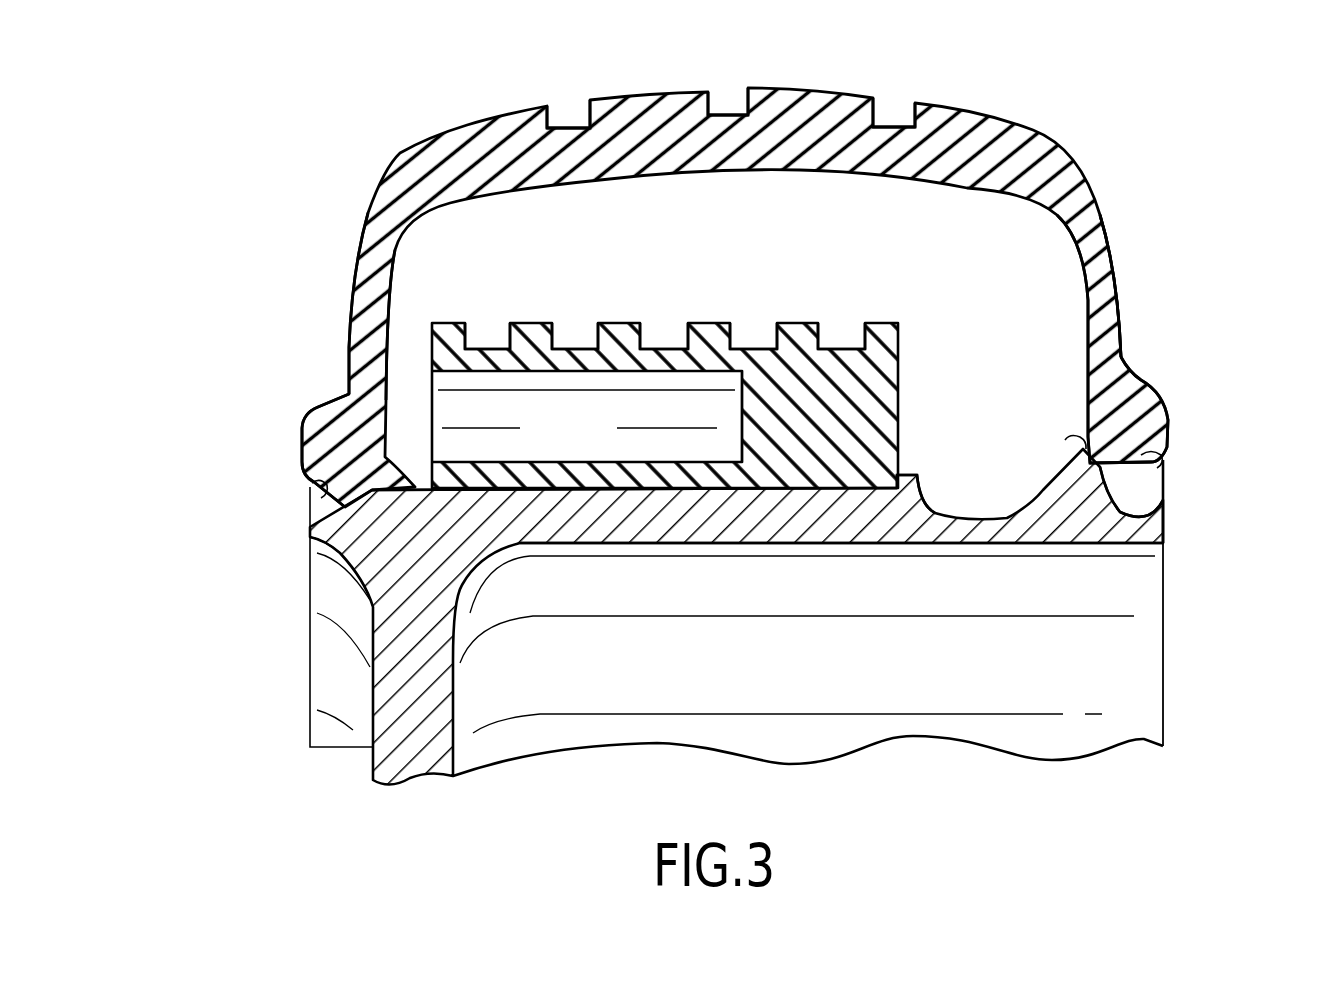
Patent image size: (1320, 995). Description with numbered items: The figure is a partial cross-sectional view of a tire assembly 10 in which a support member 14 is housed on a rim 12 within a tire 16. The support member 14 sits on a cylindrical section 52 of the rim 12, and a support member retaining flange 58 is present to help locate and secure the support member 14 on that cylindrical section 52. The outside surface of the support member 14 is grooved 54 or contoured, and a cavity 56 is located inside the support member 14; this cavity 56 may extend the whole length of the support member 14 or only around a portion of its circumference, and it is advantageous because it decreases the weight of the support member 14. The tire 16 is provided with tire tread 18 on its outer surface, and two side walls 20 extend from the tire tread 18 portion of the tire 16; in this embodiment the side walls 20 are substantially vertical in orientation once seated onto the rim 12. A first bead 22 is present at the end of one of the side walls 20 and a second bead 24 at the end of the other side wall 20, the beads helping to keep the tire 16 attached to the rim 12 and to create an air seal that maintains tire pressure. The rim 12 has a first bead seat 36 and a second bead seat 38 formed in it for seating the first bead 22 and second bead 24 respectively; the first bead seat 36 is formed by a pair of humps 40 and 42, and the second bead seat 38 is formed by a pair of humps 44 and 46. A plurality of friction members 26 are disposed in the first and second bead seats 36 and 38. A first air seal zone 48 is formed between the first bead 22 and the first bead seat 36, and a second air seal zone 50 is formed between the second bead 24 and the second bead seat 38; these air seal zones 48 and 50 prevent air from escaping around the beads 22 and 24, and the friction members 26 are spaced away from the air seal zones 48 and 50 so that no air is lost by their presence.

The tire assembly 10 is at (1140, 98).
The rim 12 is at (878, 522).
The support member 14 is at (890, 405).
The tire 16 is at (395, 156).
The tire tread 18 is at (748, 101).
The side walls 20 is at (358, 297).
The first bead 22 is at (348, 450).
The second bead 24 is at (1125, 420).
The friction members 26 is at (363, 553).
The first bead seat 36 is at (322, 518).
The second bead seat 38 is at (1167, 490).
The hump 40 is at (428, 486).
The hump 42 is at (302, 490).
The hump 44 is at (1065, 437).
The hump 46 is at (1166, 460).
The first air seal zone 48 is at (310, 492).
The second air seal zone 50 is at (1164, 462).
The cylindrical section 52 is at (600, 520).
The grooves 54 is at (796, 320).
The cavity 56 is at (589, 438).
The support member retaining flange 58 is at (920, 477).